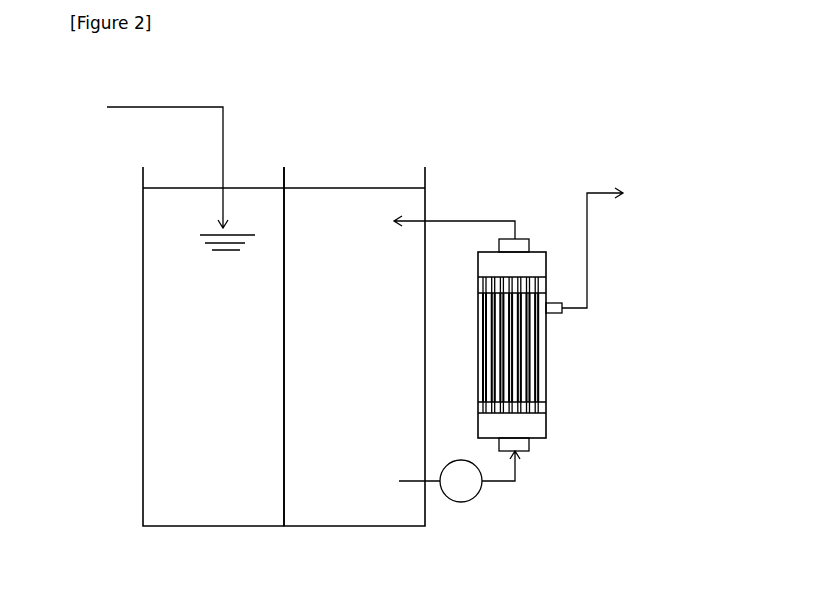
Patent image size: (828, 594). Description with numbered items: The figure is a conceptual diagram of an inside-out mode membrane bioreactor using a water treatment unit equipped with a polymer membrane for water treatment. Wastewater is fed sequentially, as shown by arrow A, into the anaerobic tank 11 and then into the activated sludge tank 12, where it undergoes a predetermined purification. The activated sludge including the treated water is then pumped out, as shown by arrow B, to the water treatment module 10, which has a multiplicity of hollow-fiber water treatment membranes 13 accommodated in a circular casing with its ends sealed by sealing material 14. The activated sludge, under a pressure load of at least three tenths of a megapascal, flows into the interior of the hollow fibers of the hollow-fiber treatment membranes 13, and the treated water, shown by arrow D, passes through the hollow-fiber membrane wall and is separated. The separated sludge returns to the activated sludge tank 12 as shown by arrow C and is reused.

The water treatment module 10 is at (546, 340).
The anaerobic tank 11 is at (263, 506).
The activated sludge tank 12 is at (330, 506).
The hollow-fiber water treatment membranes 13 is at (535, 370).
The sealing material 14 is at (537, 407).